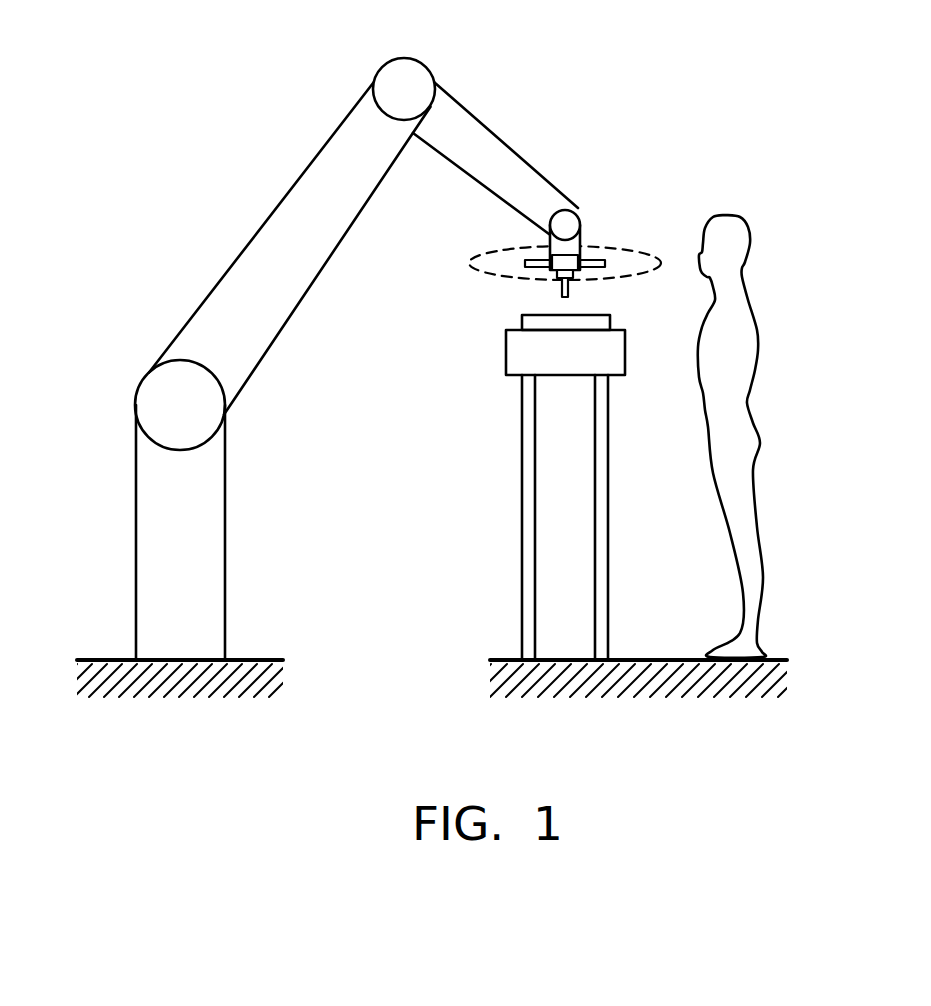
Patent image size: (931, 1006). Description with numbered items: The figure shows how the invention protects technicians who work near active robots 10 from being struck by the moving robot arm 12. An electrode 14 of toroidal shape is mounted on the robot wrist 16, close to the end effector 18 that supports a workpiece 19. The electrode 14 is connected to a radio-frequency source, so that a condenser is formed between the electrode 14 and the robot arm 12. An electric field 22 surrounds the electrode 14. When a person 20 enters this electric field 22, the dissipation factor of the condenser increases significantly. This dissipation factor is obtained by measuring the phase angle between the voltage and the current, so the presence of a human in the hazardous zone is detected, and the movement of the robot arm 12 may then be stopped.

The robot 10 is at (268, 371).
The robot arm 12 is at (475, 147).
The electrode 14 is at (513, 232).
The robot wrist 16 is at (588, 220).
The end effector 18 is at (613, 294).
The workpiece 19 is at (485, 320).
The person 20 is at (752, 436).
The electric field 22 is at (574, 209).